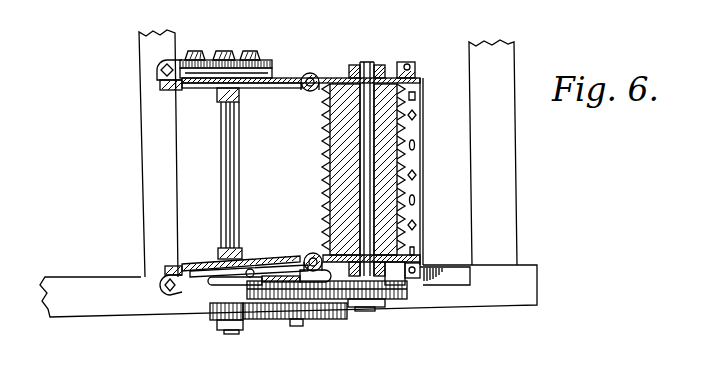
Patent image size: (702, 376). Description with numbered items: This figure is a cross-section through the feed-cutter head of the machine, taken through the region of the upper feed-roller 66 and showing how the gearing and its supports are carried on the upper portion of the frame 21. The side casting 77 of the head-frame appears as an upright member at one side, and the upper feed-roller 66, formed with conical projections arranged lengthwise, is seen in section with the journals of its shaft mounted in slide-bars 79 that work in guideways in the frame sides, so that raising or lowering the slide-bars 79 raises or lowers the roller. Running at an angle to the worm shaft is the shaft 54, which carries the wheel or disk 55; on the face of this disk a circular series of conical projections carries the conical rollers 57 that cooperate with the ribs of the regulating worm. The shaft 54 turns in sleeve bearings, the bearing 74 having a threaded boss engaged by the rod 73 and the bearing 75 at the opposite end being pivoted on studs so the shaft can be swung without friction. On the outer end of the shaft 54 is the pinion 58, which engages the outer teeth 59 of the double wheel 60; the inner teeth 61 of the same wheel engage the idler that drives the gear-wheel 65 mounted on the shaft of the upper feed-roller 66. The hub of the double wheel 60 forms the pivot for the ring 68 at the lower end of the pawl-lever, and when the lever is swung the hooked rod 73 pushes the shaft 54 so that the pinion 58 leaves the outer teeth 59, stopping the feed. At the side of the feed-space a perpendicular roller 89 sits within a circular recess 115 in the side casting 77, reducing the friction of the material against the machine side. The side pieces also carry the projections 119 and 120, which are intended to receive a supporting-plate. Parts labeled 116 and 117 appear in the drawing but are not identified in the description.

The upper portion of the frame 21 is at (90, 310).
The shaft 54 is at (240, 142).
The wheel or disk 55 is at (274, 63).
The conical rollers 57 is at (205, 49).
The pinion 58 is at (212, 324).
The outer teeth 59 is at (320, 320).
The double wheel 60 is at (350, 303).
The inner teeth 61 is at (290, 323).
The gear-wheel 65 is at (398, 287).
The upper feed-roller 66 is at (324, 165).
The ring 68 is at (322, 274).
The rod 73 is at (258, 262).
The bearing 74 is at (213, 290).
The bearing 75 is at (216, 95).
The side casting 77 is at (252, 89).
The slide-bars 79 is at (378, 63).
The perpendicular rollers 89 is at (306, 92).
The circular recesses 115 is at (317, 73).
The lever 116 is at (250, 262).
The upper slide plate 117 is at (284, 89).
The projection 119 is at (181, 264).
The projection 120 is at (180, 87).